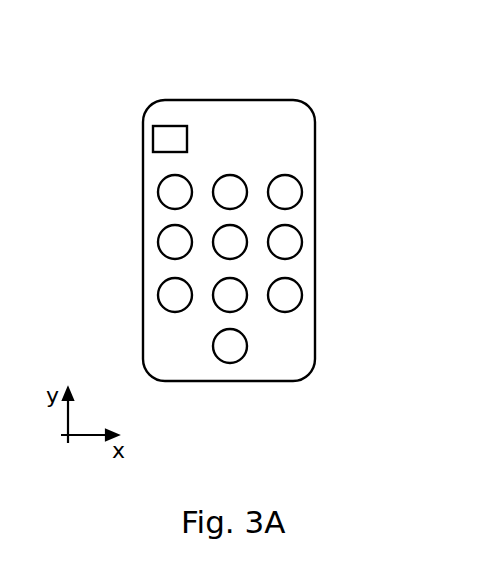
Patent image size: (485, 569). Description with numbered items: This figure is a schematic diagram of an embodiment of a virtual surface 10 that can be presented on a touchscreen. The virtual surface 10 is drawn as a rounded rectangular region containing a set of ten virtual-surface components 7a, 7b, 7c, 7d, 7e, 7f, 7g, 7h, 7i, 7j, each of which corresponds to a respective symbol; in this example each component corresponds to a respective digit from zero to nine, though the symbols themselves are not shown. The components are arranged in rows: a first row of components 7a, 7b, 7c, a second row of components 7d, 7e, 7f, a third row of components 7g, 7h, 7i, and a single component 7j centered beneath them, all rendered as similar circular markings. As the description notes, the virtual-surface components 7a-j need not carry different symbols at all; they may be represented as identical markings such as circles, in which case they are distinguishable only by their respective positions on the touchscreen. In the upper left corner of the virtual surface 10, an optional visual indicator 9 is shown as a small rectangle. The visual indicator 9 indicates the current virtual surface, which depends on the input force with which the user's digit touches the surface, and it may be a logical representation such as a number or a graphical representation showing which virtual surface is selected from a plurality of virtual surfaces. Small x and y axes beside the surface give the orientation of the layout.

The virtual surface 10 is at (297, 126).
The visual indicator 9 is at (167, 126).
The virtual-surface component 7a is at (158, 192).
The virtual-surface component 7b is at (229, 175).
The virtual-surface component 7c is at (302, 192).
The virtual-surface component 7d is at (158, 242).
The virtual-surface component 7e is at (243, 229).
The virtual-surface component 7f is at (302, 242).
The virtual-surface component 7g is at (163, 307).
The virtual-surface component 7h is at (241, 306).
The virtual-surface component 7i is at (302, 295).
The virtual-surface component 7j is at (247, 348).